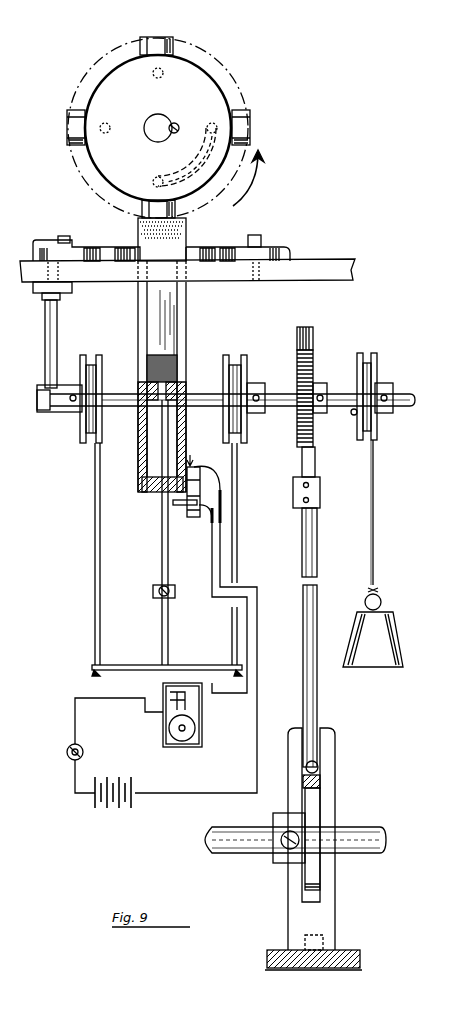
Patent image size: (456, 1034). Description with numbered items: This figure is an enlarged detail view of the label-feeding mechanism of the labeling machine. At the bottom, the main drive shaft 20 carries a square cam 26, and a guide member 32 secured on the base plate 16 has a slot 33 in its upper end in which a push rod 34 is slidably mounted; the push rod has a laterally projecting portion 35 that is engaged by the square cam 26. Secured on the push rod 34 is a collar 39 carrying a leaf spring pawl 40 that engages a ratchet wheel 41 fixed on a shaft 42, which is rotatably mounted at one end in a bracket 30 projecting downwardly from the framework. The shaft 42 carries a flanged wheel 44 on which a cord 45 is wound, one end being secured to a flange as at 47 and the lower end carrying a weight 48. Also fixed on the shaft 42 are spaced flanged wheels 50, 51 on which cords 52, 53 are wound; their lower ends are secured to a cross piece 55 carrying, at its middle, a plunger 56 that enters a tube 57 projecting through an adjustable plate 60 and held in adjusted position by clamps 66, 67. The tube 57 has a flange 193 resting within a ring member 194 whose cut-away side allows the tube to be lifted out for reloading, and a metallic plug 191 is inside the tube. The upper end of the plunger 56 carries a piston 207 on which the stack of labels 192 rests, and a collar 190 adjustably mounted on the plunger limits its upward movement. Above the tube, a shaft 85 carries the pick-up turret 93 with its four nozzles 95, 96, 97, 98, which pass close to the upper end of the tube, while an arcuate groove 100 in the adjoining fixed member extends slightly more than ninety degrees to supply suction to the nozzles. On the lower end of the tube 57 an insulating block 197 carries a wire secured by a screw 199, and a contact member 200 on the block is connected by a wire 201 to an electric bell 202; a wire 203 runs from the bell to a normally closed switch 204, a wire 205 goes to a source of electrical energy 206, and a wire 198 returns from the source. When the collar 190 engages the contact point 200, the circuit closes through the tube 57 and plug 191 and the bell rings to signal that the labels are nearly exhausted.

The base plate 16 is at (350, 955).
The main drive shaft 20 is at (362, 836).
The square cam 26 is at (315, 815).
The bracket 30 is at (54, 320).
The guide member 32 is at (336, 742).
The slot 33 is at (304, 728).
The push rod 34 is at (312, 334).
The laterally projecting portion 35 is at (318, 766).
The collar 39 is at (321, 490).
The leaf spring pawl 40 is at (308, 470).
The ratchet wheel 41 is at (314, 370).
The shaft 42 is at (48, 402).
The flanged wheel 44 is at (375, 378).
The cord 45 is at (376, 500).
The cord securing point 47 is at (352, 414).
The weight 48 is at (384, 632).
The flanged wheel 50 is at (90, 358).
The flanged wheel 51 is at (235, 358).
The cord 52 is at (96, 504).
The cord 53 is at (237, 506).
The cross piece 55 is at (130, 664).
The plunger 56 is at (162, 542).
The tube 57 is at (140, 444).
The adjustable plate 60 is at (322, 268).
The clamp 66 is at (235, 246).
The clamp 67 is at (95, 244).
The shaft 85 is at (160, 128).
The pick-up turret 93 is at (212, 92).
The nozzle 95 is at (70, 128).
The nozzle 96 is at (168, 44).
The nozzle 97 is at (252, 128).
The nozzle 98 is at (176, 211).
The arcuate groove 100 is at (198, 160).
The collar 190 is at (153, 592).
The metallic plug 191 is at (145, 492).
The stack of labels 192 is at (180, 360).
The flange 193 is at (135, 250).
The ring member 194 is at (115, 253).
The insulating block 197 is at (206, 492).
The wire 198 is at (220, 478).
The screw 199 is at (192, 454).
The contact member 200 is at (172, 506).
The wire 201 is at (212, 560).
The electric bell 202 is at (198, 724).
The wire 203 is at (94, 700).
The switch 204 is at (68, 748).
The wire 205 is at (75, 790).
The source of electrical energy 206 is at (118, 809).
The piston 207 is at (140, 390).